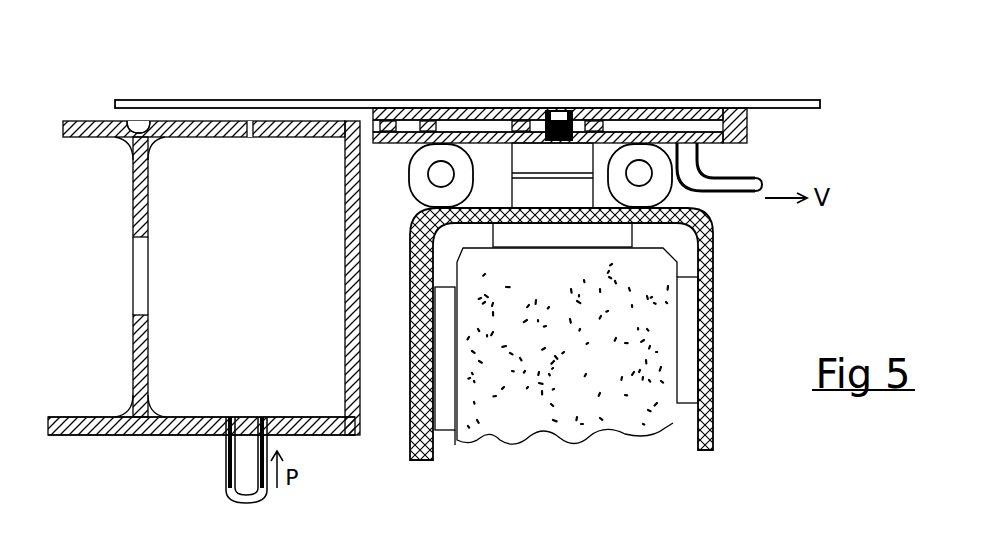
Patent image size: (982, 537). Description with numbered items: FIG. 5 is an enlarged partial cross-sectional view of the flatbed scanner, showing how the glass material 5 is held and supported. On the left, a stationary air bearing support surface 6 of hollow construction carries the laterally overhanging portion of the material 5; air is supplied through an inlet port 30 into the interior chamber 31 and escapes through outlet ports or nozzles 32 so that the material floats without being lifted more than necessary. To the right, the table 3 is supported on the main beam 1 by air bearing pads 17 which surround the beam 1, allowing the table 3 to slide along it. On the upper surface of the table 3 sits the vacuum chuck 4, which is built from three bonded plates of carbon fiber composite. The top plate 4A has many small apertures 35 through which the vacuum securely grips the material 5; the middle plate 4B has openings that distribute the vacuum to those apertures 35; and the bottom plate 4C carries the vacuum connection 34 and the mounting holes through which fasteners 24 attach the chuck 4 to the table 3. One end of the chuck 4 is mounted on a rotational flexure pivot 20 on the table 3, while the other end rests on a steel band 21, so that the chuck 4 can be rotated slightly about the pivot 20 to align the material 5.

The main beam 1 is at (660, 360).
The table 3 is at (717, 298).
The vacuum chuck 4 is at (752, 110).
The top plate 4A is at (390, 117).
The middle plate 4B is at (423, 118).
The bottom plate 4C is at (500, 127).
The material 5 is at (175, 100).
The air bearing support surfaces 6 is at (98, 122).
The air bearing pads 17 is at (700, 387).
The rotational flexure pivot 20 is at (540, 190).
The band 21 is at (403, 183).
The fastener 24 is at (563, 120).
The inlet port 30 is at (227, 463).
The chamber 31 is at (203, 370).
The outlet ports 32 is at (250, 140).
The vacuum connection 34 is at (737, 202).
The apertures 35 is at (140, 118).